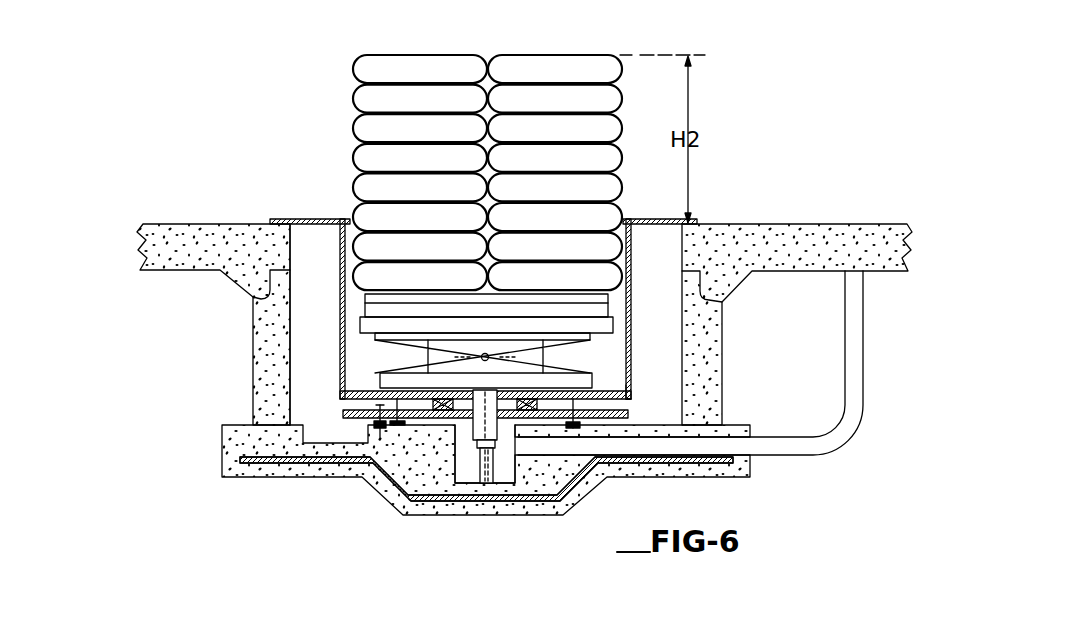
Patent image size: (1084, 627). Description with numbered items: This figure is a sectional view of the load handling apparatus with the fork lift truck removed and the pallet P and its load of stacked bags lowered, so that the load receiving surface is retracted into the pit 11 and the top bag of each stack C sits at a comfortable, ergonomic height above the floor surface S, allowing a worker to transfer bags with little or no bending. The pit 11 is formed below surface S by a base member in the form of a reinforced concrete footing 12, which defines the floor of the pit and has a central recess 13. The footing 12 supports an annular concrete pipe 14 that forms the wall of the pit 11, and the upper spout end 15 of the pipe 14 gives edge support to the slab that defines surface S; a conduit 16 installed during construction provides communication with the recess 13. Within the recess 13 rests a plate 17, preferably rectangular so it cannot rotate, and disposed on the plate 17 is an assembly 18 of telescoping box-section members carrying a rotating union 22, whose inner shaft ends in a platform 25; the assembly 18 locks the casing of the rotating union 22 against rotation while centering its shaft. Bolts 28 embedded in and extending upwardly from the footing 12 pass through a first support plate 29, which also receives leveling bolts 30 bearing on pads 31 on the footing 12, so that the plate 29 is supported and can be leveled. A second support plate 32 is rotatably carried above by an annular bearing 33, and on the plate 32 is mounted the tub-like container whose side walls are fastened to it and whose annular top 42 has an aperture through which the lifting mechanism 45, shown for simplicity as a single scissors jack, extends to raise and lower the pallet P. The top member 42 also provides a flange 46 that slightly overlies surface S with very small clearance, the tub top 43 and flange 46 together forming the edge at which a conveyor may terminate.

The pit 11 is at (670, 353).
The reinforced concrete footing 12 is at (749, 478).
The central recess 13 is at (455, 470).
The annular concrete pipe 14 is at (258, 355).
The upper spout end 15 is at (293, 273).
The conduit 16 is at (872, 362).
The plate 17 is at (470, 487).
The assembly 18 is at (503, 457).
The rotating union 22 is at (455, 391).
The platform 25 is at (510, 382).
The bolts 28 is at (375, 437).
The first support plate 29 is at (628, 415).
The leveling bolts 30 is at (378, 413).
The pads 31 is at (390, 442).
The second support plate 32 is at (632, 392).
The annular bearing 33 is at (445, 400).
The annular top 42 is at (343, 219).
The tub top 43 is at (357, 391).
The lifting mechanism 45 is at (584, 356).
The flange 46 is at (300, 219).
The coin stack C is at (575, 57).
The pallet P is at (608, 315).
The floor surface level S is at (800, 232).